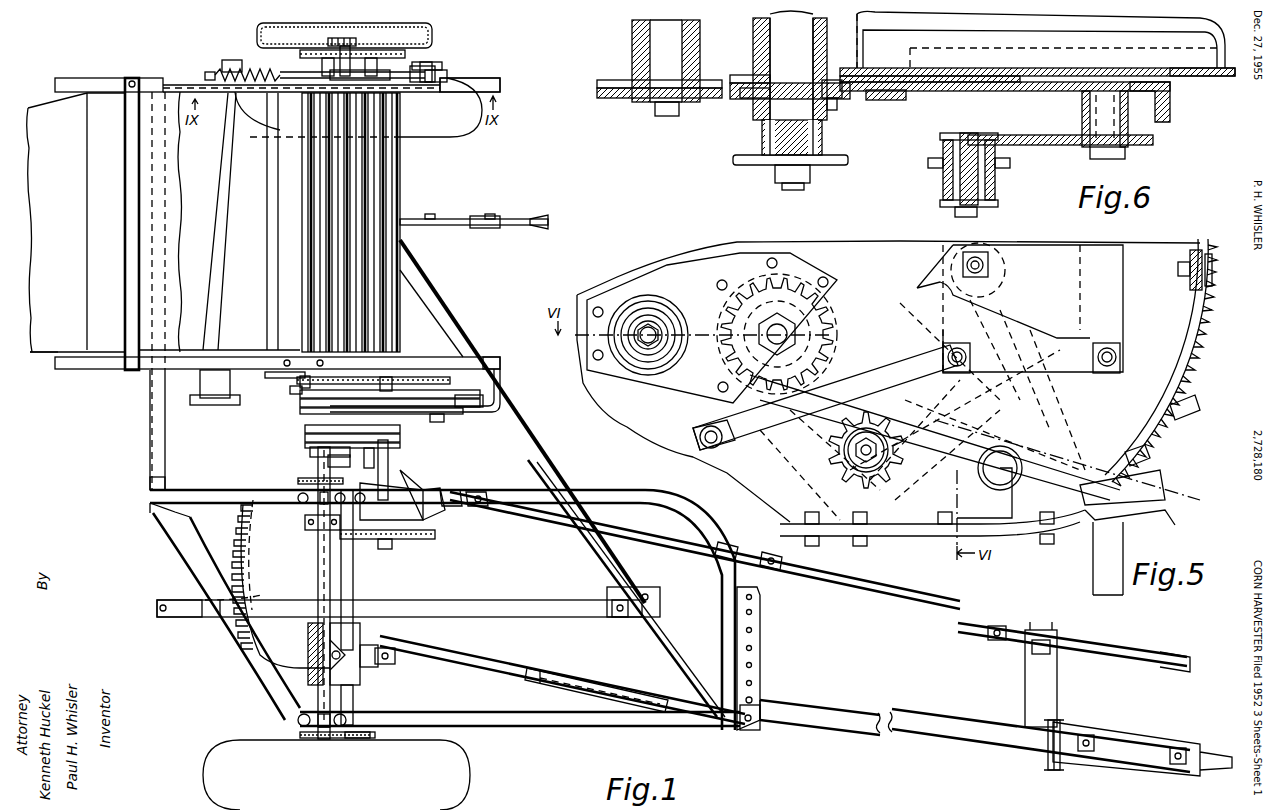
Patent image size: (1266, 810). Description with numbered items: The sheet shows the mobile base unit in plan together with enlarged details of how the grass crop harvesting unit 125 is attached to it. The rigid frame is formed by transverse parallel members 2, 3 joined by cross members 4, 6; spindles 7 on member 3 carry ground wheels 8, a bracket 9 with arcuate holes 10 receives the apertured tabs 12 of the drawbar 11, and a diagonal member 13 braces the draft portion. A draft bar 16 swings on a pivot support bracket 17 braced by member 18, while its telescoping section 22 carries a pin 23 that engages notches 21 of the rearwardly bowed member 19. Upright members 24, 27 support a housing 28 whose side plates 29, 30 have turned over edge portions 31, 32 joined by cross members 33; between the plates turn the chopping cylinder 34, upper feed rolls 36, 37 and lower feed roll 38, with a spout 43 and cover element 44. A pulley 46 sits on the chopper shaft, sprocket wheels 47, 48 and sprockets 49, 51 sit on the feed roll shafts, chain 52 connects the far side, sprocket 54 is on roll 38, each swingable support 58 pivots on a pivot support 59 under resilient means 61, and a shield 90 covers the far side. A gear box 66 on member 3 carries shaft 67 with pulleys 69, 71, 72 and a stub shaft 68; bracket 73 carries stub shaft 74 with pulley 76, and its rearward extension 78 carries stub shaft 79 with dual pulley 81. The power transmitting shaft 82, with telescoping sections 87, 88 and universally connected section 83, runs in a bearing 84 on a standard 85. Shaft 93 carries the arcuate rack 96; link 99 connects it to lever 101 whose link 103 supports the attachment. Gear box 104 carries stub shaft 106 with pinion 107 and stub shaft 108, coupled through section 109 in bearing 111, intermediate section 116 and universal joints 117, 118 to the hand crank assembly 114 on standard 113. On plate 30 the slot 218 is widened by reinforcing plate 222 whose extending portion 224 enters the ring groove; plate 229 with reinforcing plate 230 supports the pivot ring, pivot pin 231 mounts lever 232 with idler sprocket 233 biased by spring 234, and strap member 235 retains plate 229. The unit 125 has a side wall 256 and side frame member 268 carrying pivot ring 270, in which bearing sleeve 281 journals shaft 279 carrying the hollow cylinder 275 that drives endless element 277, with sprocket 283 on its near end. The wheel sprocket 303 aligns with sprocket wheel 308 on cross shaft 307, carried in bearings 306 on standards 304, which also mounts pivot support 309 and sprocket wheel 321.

In FIG. 1, the transversely disposed parallel member 2 is at (150, 432).
In FIG. 1, the transverse frame member 3 is at (352, 700).
In FIG. 1, the cross member 4 is at (577, 726).
In FIG. 1, the cross member 6 is at (636, 492).
In FIG. 1, the spindle 7 is at (340, 740).
In FIG. 1, the ground engaging wheel 8 is at (458, 135).
In FIG. 1, the bracket 9 is at (763, 608).
In FIG. 1, the spaced holes 10 is at (760, 650).
In FIG. 1, the drawbar 11 is at (888, 708).
In FIG. 1, the apertured tabs 12 is at (762, 680).
In FIG. 1, the diagonal member 13 is at (585, 540).
In FIG. 1, the draft bar 16 is at (498, 600).
In FIG. 1, the pivot support bracket 17 is at (628, 617).
In FIG. 1, the bracing member 18 is at (700, 590).
In FIG. 1, the rearwardly bowed member 19 is at (250, 642).
In FIG. 1, the notches 21 is at (228, 540).
In FIG. 1, the telescoping section 22 is at (197, 617).
In FIG. 1, the depending lug or pin 23 is at (262, 598).
In FIG. 1, the upwardly extending member 24 is at (150, 480).
In FIG. 1, the upwardly extending member 27 is at (498, 358).
In FIG. 5, the upwardly extending member 27 is at (1093, 568).
In FIG. 1, the housing 28 is at (177, 76).
In FIG. 1, the upright plate member 29 is at (250, 98).
In FIG. 1, the upright plate member 30 is at (100, 357).
In FIG. 6, the upright plate member 30 is at (605, 80).
In FIG. 5, the upright plate member 30 is at (855, 252).
In FIG. 1, the turned over edge portion 31 is at (488, 80).
In FIG. 1, the turned over edge portion 32 is at (85, 372).
In FIG. 5, the turned over edge portion 32 is at (1212, 250).
In FIG. 1, the cross members 33 is at (126, 268).
In FIG. 1, the rotating chopping device 34 is at (219, 256).
In FIG. 1, the upper feed roll 36 is at (300, 298).
In FIG. 1, the upper feed roll 37 is at (400, 186).
In FIG. 6, the lower feed roll 38 is at (632, 36).
In FIG. 5, the lower feed roll 38 is at (660, 345).
In FIG. 1, the spout 43 is at (42, 357).
In FIG. 1, the cover element 44 is at (176, 170).
In FIG. 1, the pulley 46 is at (183, 430).
In FIG. 1, the sprocket wheel 47 is at (280, 382).
In FIG. 1, the sprocket wheel 48 is at (390, 375).
In FIG. 1, the sprocket 49 is at (318, 50).
In FIG. 1, the sprocket 51 is at (386, 52).
In FIG. 1, the chain 52 is at (412, 58).
In FIG. 1, the sprocket 54 is at (345, 36).
In FIG. 5, the swingable support 58 is at (925, 268).
In FIG. 5, the pivot support 59 is at (990, 268).
In FIG. 1, the resilient means 61 is at (248, 70).
In FIG. 1, the gear box 66 is at (362, 632).
In FIG. 1, the shaft 67 is at (356, 596).
In FIG. 1, the stub shaft 68 is at (378, 680).
In FIG. 1, the pulley 69 is at (328, 462).
In FIG. 1, the pulley 71 is at (312, 452).
In FIG. 1, the pulley 72 is at (292, 388).
In FIG. 1, the bracket 73 is at (500, 390).
In FIG. 5, the bracket 73 is at (1185, 262).
In FIG. 1, the stub shaft 74 is at (445, 422).
In FIG. 1, the pulley 76 is at (480, 412).
In FIG. 1, the rearward extension 78 is at (405, 420).
In FIG. 1, the stub shaft 79 is at (375, 462).
In FIG. 1, the dual pulley 81 is at (402, 447).
In FIG. 1, the power transmitting shaft 82 is at (470, 668).
In FIG. 1, the universally connected section 83 is at (1135, 738).
In FIG. 1, the bearing 84 is at (1068, 730).
In FIG. 1, the standard 85 is at (1052, 760).
In FIG. 1, the telescoping section 87 is at (565, 672).
In FIG. 1, the telescoping section 88 is at (826, 702).
In FIG. 1, the shield 90 is at (430, 30).
In FIG. 1, the shaft 93 is at (395, 470).
In FIG. 1, the arcuate portion 96 is at (445, 536).
In FIG. 1, the link 99 is at (420, 216).
In FIG. 1, the lever 101 is at (472, 216).
In FIG. 1, the link 103 is at (540, 216).
In FIG. 1, the gear box 104 is at (455, 492).
In FIG. 1, the stub shaft 106 is at (385, 548).
In FIG. 1, the pinion 107 is at (412, 536).
In FIG. 1, the stub shaft 108 is at (470, 510).
In FIG. 1, the forwardly projecting section 109 is at (632, 540).
In FIG. 1, the bearing 111 is at (740, 545).
In FIG. 1, the standard 113 is at (1030, 650).
In FIG. 1, the stub shaft and hand crank assembly 114 is at (1105, 628).
In FIG. 1, the intermediate section 116 is at (856, 590).
In FIG. 1, the universal joint 117 is at (770, 568).
In FIG. 1, the universal joint 118 is at (998, 628).
In FIG. 6, the grass crop harvesting unit 125 is at (905, 60).
In FIG. 5, the grass crop harvesting unit 125 is at (910, 540).
In FIG. 5, the open ended slot 218 is at (1000, 392).
In FIG. 6, the reinforcing plate 222 is at (604, 95).
In FIG. 5, the reinforcing plate 222 is at (668, 395).
In FIG. 6, the extending portions 224 is at (740, 76).
In FIG. 6, the bearing retaining plate 229 is at (1010, 92).
In FIG. 5, the bearing retaining plate 229 is at (1020, 445).
In FIG. 6, the reinforcing plate 230 is at (930, 92).
In FIG. 5, the reinforcing plate 230 is at (920, 470).
In FIG. 6, the pivot pin 231 is at (1115, 152).
In FIG. 5, the pivot pin 231 is at (1022, 470).
In FIG. 6, the lever 232 is at (1055, 146).
In FIG. 5, the lever 232 is at (1165, 490).
In FIG. 6, the idler sprocket 233 is at (935, 168).
In FIG. 5, the idler sprocket 233 is at (866, 410).
In FIG. 5, the spring 234 is at (1190, 370).
In FIG. 6, the strap member 235 is at (905, 98).
In FIG. 5, the strap member 235 is at (712, 450).
In FIG. 6, the side wall 256 is at (1172, 98).
In FIG. 6, the side frame member 268 is at (1205, 78).
In FIG. 5, the side frame member 268 is at (890, 540).
In FIG. 6, the pivot ring 270 is at (730, 98).
In FIG. 6, the hollow cylinder 275 is at (752, 52).
In FIG. 6, the endless element 277 is at (752, 25).
In FIG. 6, the shaft 279 is at (762, 140).
In FIG. 5, the shaft 279 is at (777, 330).
In FIG. 6, the bearing sleeve 281 is at (832, 100).
In FIG. 6, the sprocket 283 is at (748, 168).
In FIG. 5, the sprocket 283 is at (726, 305).
In FIG. 1, the sprocket 303 is at (365, 740).
In FIG. 1, the standards 304 is at (300, 508).
In FIG. 1, the bearings 306 is at (352, 520).
In FIG. 1, the cross shaft 307 is at (318, 564).
In FIG. 1, the sprocket wheel 308 is at (310, 738).
In FIG. 1, the pivot support 309 is at (305, 528).
In FIG. 1, the sprocket wheel 321 is at (298, 480).